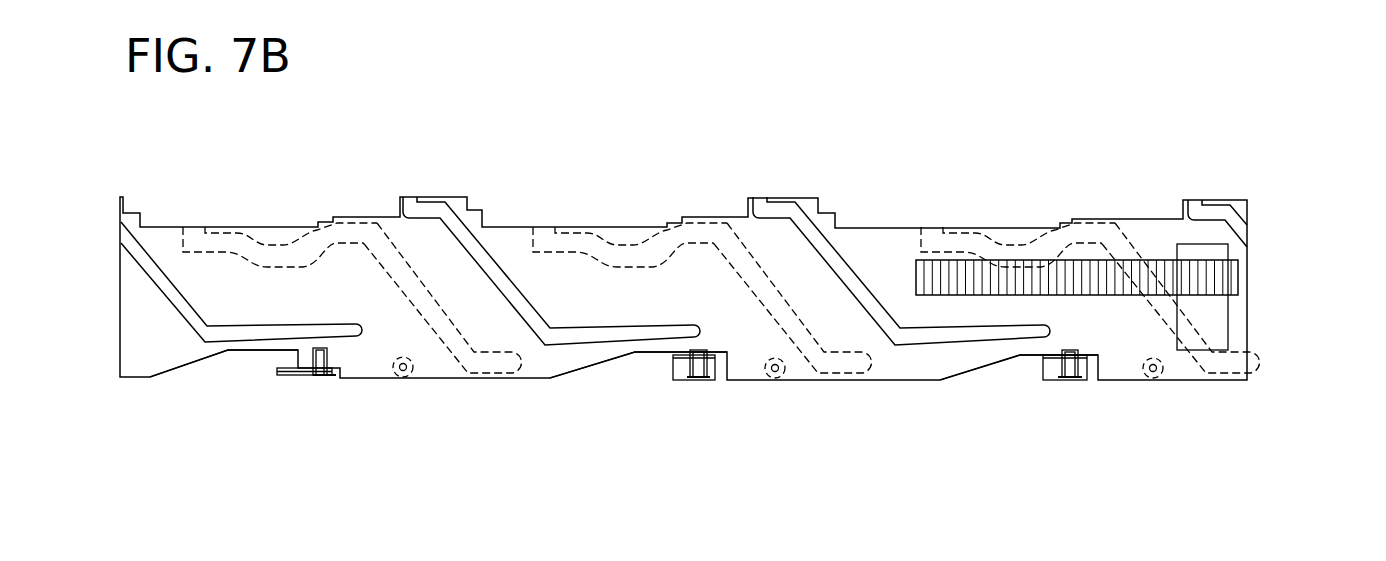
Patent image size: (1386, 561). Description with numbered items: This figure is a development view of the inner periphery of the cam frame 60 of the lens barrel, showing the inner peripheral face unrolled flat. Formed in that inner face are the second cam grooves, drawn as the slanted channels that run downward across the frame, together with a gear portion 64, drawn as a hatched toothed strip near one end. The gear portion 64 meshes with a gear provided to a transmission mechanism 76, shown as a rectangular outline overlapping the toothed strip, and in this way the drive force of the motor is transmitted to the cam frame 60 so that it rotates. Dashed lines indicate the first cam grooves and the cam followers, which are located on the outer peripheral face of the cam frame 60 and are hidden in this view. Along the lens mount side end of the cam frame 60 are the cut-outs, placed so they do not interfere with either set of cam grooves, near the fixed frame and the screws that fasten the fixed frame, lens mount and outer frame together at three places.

The cam frame 60 is at (297, 172).
The gear portion 64 is at (1233, 277).
The transmission mechanism 76 is at (1223, 315).